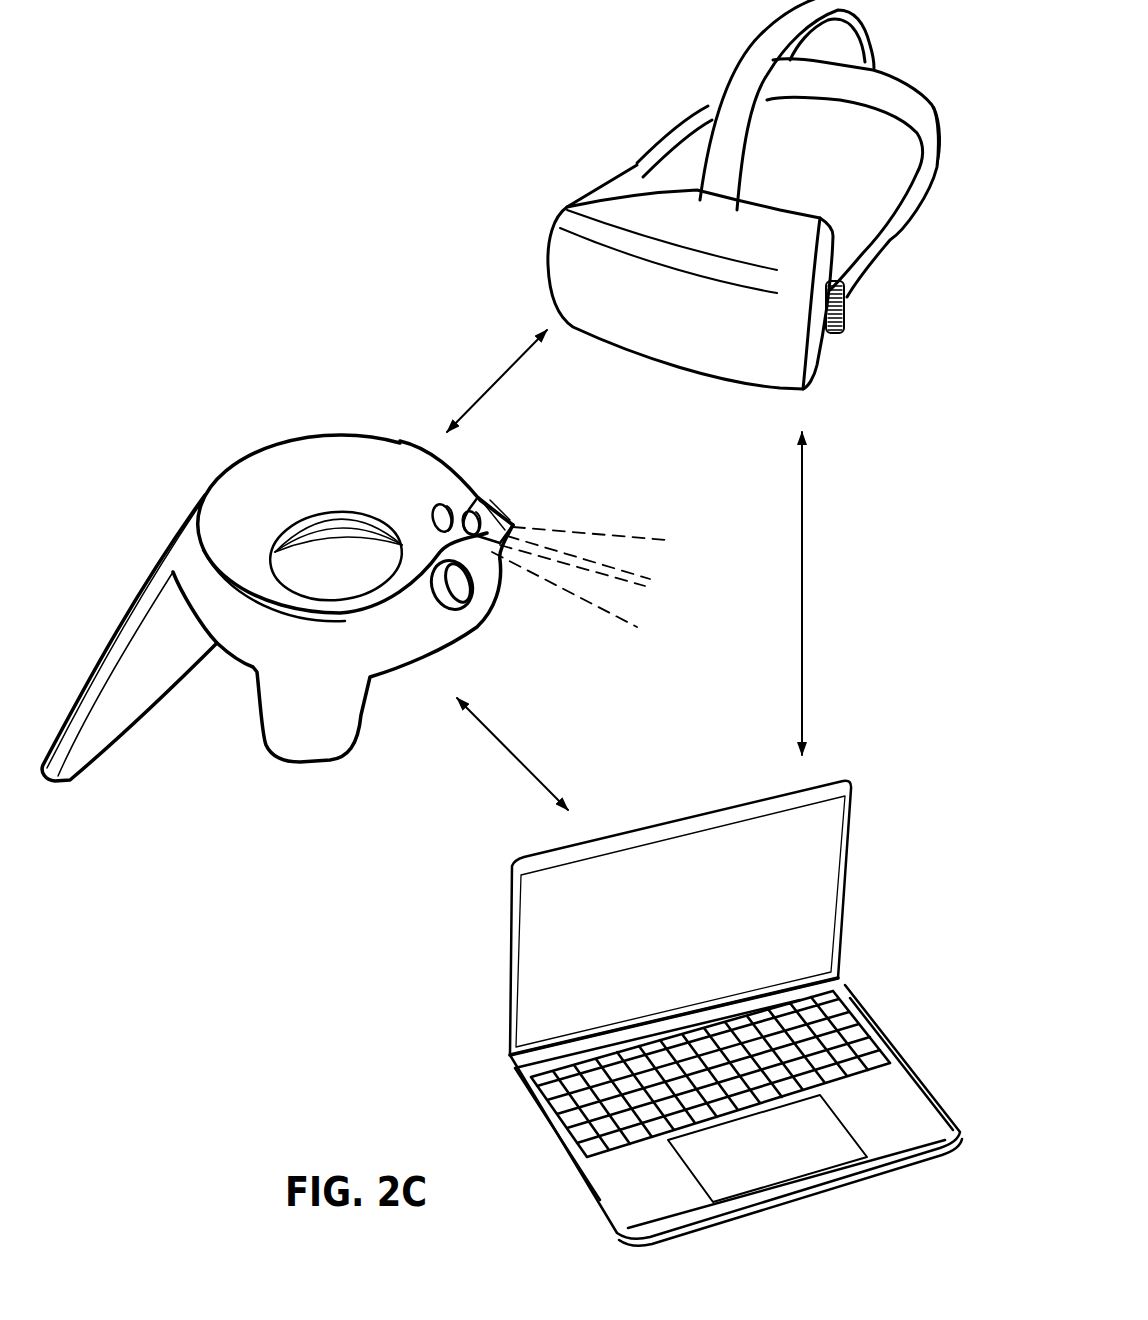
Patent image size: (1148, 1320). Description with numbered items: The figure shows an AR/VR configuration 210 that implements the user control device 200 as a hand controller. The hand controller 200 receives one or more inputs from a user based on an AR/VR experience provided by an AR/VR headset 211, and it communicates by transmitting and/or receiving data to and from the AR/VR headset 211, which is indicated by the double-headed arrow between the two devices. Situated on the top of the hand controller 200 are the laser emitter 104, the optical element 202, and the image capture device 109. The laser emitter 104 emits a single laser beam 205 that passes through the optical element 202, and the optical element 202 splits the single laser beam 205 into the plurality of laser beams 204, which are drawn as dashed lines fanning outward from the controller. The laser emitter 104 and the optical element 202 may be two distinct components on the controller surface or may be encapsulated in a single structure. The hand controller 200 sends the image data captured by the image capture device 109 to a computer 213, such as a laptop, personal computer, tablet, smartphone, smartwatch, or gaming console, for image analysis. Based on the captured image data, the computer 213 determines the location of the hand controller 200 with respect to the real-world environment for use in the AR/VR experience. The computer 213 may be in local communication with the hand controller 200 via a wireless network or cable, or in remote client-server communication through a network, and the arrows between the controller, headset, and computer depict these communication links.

The AR/VR configuration 210 is at (196, 92).
The AR/VR headset 211 is at (588, 170).
The user control device 200 is at (222, 443).
The laser emitter 104 is at (450, 505).
The single laser beam 205 is at (465, 512).
The optical element 202 is at (484, 504).
The plurality of laser beams 204 is at (612, 533).
The image capture device 109 is at (458, 585).
The computer 213 is at (853, 760).